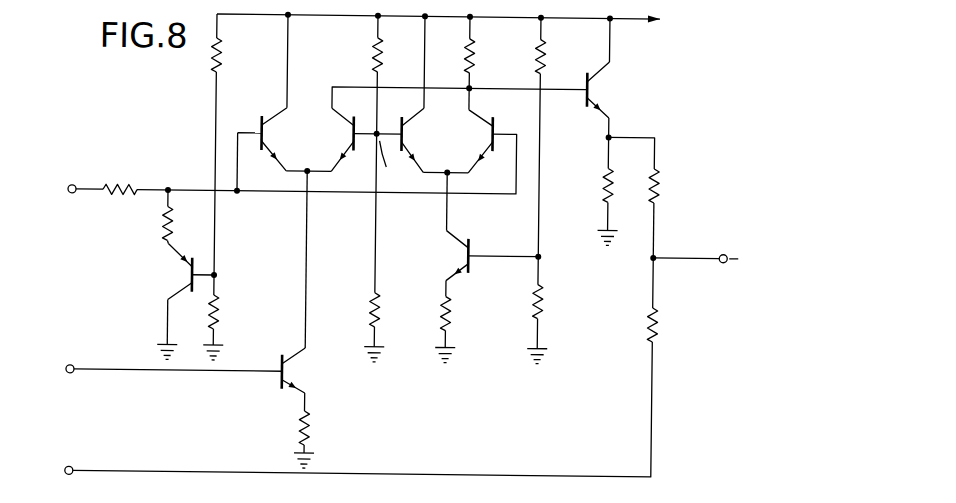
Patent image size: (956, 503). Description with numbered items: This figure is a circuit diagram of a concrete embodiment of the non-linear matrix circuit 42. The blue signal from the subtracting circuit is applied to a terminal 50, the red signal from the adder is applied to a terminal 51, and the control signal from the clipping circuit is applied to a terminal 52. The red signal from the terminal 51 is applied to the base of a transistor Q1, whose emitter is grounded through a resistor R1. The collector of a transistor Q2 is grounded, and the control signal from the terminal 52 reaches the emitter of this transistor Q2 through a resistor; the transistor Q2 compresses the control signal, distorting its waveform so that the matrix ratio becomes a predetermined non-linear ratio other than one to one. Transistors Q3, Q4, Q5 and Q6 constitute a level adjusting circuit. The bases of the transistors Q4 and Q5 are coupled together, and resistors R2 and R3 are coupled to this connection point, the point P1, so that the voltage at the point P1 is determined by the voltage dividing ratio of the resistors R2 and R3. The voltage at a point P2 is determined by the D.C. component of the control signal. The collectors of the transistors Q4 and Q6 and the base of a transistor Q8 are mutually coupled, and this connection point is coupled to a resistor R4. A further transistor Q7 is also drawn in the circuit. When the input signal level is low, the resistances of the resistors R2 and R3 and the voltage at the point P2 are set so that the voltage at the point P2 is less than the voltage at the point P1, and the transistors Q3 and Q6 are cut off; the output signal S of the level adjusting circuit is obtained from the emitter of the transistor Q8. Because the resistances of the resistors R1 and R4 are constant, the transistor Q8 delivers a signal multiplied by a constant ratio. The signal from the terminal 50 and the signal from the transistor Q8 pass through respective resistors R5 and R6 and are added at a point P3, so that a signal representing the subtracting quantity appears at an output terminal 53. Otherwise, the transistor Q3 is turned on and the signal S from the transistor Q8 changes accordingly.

The non-linear matrix circuit 42 is at (344, 8).
The terminal 50 is at (74, 468).
The terminal 51 is at (74, 366).
The terminal 52 is at (75, 185).
The output terminal 53 is at (725, 248).
The transistor Q1 is at (305, 371).
The transistor Q2 is at (180, 271).
The transistor Q3 is at (262, 128).
The transistor Q4 is at (332, 139).
The transistor Q5 is at (423, 140).
The transistor Q6 is at (496, 140).
The transistor Q7 is at (482, 255).
The transistor Q8 is at (610, 90).
The resistor R1 is at (317, 428).
The resistor R2 is at (391, 55).
The resistor R3 is at (388, 310).
The resistor R4 is at (483, 56).
The resistor R5 is at (666, 325).
The resistor R6 is at (668, 186).
The point P1 is at (379, 129).
The point P2 is at (171, 187).
The point P3 is at (652, 253).
The output signal S is at (628, 125).